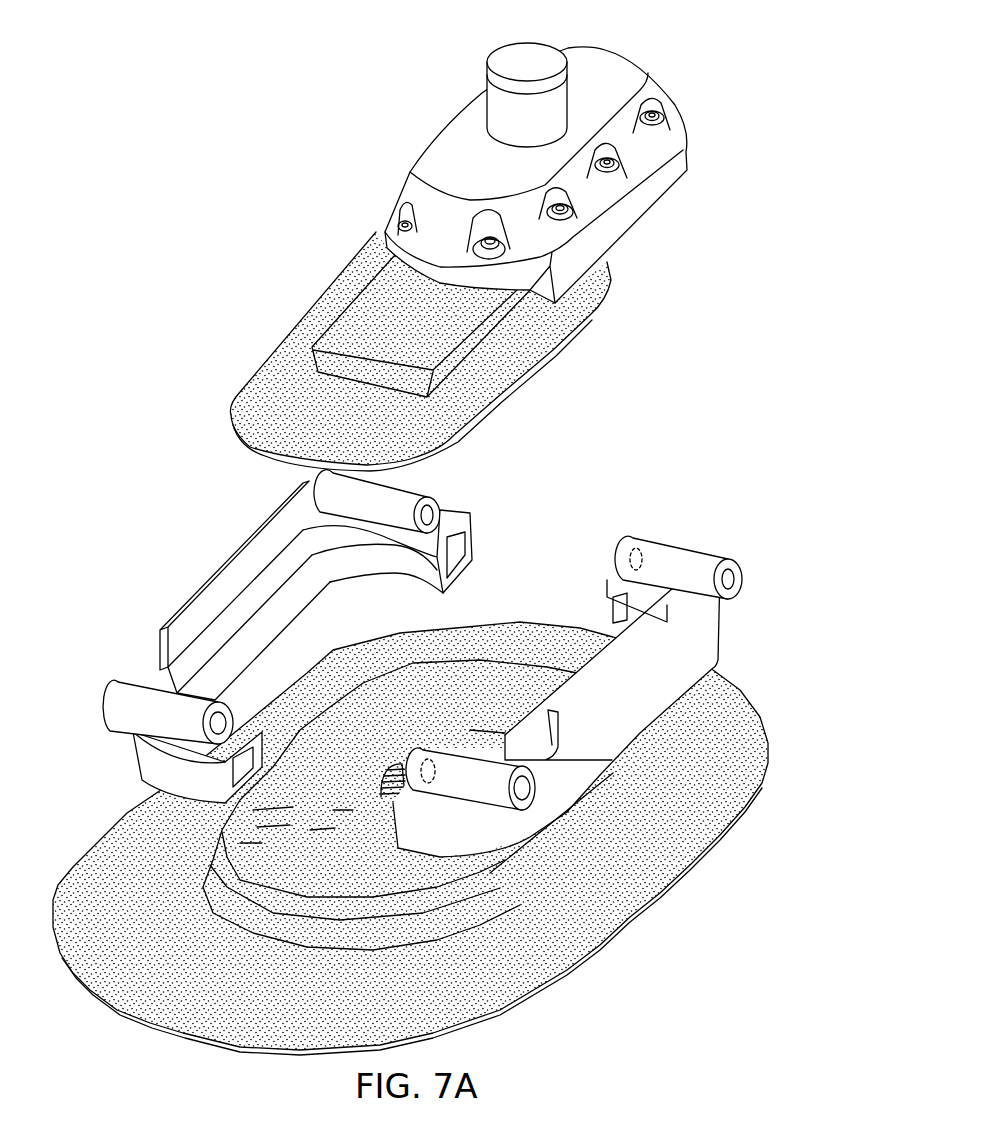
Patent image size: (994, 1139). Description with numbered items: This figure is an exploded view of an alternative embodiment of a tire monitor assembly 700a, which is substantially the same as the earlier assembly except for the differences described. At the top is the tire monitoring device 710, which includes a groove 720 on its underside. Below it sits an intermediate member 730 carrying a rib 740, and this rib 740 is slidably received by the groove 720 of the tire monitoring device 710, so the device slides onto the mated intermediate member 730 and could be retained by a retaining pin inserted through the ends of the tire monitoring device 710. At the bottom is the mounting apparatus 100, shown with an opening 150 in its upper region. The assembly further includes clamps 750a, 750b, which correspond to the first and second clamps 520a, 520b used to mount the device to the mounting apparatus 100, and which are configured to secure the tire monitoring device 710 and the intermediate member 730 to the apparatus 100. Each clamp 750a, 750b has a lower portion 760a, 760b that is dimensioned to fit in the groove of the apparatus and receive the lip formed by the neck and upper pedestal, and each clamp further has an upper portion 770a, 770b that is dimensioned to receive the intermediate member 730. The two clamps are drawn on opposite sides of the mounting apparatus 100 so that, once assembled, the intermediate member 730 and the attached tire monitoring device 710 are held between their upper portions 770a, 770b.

The mounting apparatus 100 is at (465, 995).
The opening in patch 150 is at (408, 757).
The first clamp 520a is at (593, 736).
The second clamp 520b is at (264, 638).
The clamp 750a is at (720, 617).
The clamp 750b is at (130, 672).
The lower portion 760a is at (493, 832).
The lower portion 760b is at (143, 767).
The upper portion 770a is at (697, 585).
The upper portion 770b is at (180, 630).
The tire monitor assembly 700a is at (457, 240).
The tire monitoring device 710 is at (600, 67).
The groove 720 is at (419, 350).
The intermediate member 730 is at (280, 400).
The rib 740 is at (338, 323).